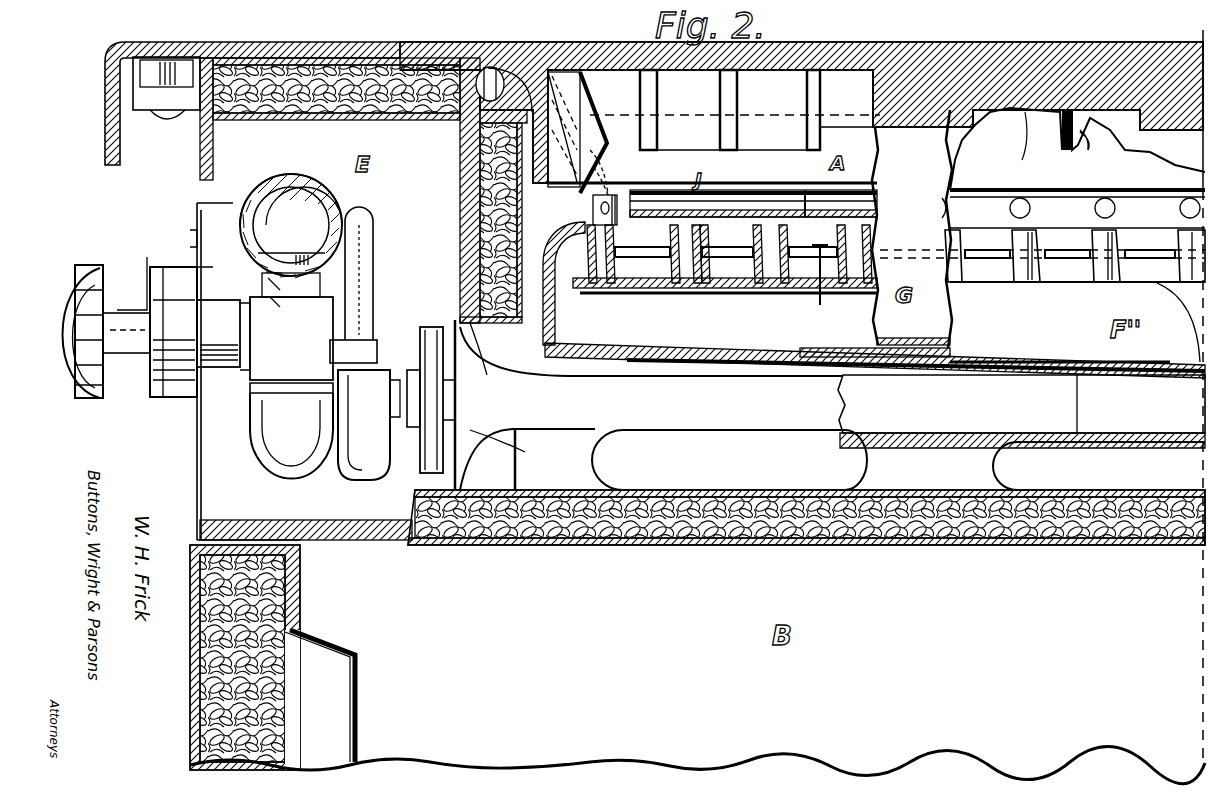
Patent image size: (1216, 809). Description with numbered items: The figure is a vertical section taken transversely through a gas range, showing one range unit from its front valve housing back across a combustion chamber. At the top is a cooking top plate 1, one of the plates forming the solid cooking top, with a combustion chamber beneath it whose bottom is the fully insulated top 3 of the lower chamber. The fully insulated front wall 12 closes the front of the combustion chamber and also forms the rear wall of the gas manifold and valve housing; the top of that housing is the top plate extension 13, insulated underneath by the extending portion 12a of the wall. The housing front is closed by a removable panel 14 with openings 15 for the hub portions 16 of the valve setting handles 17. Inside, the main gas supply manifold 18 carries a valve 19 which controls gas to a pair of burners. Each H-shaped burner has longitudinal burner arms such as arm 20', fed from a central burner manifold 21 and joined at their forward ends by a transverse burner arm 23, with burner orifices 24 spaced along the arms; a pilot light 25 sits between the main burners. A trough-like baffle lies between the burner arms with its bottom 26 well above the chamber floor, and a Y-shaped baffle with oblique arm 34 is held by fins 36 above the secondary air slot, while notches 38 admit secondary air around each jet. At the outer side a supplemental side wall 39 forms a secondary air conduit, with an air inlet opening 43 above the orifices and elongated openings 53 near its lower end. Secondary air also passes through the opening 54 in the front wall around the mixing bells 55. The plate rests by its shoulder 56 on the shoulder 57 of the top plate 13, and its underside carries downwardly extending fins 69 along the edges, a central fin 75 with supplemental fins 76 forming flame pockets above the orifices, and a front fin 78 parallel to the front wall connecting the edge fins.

The cooking top plate 1 is at (900, 52).
The insulated top of chamber 3 is at (802, 530).
The insulated front wall 12 is at (480, 193).
The extending portion of the front wall 12a is at (292, 56).
The top plate extension 13 is at (355, 50).
The removable panel 14 is at (197, 452).
The opening 15 is at (177, 382).
The hub portion 16 is at (720, 88).
The valve setting handle 17 is at (95, 268).
The main gas supply manifold 18 is at (278, 182).
The valve 19 is at (352, 343).
The burner arm 20' is at (875, 328).
The burner manifold 21 is at (1027, 376).
The transverse burner arm 23 is at (562, 283).
The burner orifice 24 is at (670, 235).
The pilot light 25 is at (592, 212).
The bottom of baffle 26 is at (590, 112).
The oblique arm of Y-shaped baffle 34 is at (745, 182).
The fin 36 is at (810, 184).
The notch 38 is at (753, 235).
The supplemental side wall 39 is at (526, 522).
The secondary air inlet opening 43 is at (1095, 208).
The elongated secondary air inlet opening 53 is at (898, 460).
The opening in front wall 54 is at (649, 405).
The mixing bell 55 is at (515, 445).
The shoulder of cooking top plate 56 is at (510, 58).
The shoulder of top plate 57 is at (482, 58).
The downwardly extending fin 69 is at (1025, 110).
The downwardly extending fin 75 is at (690, 186).
The supplemental fin 76 is at (1075, 142).
The front fin 78 is at (470, 160).